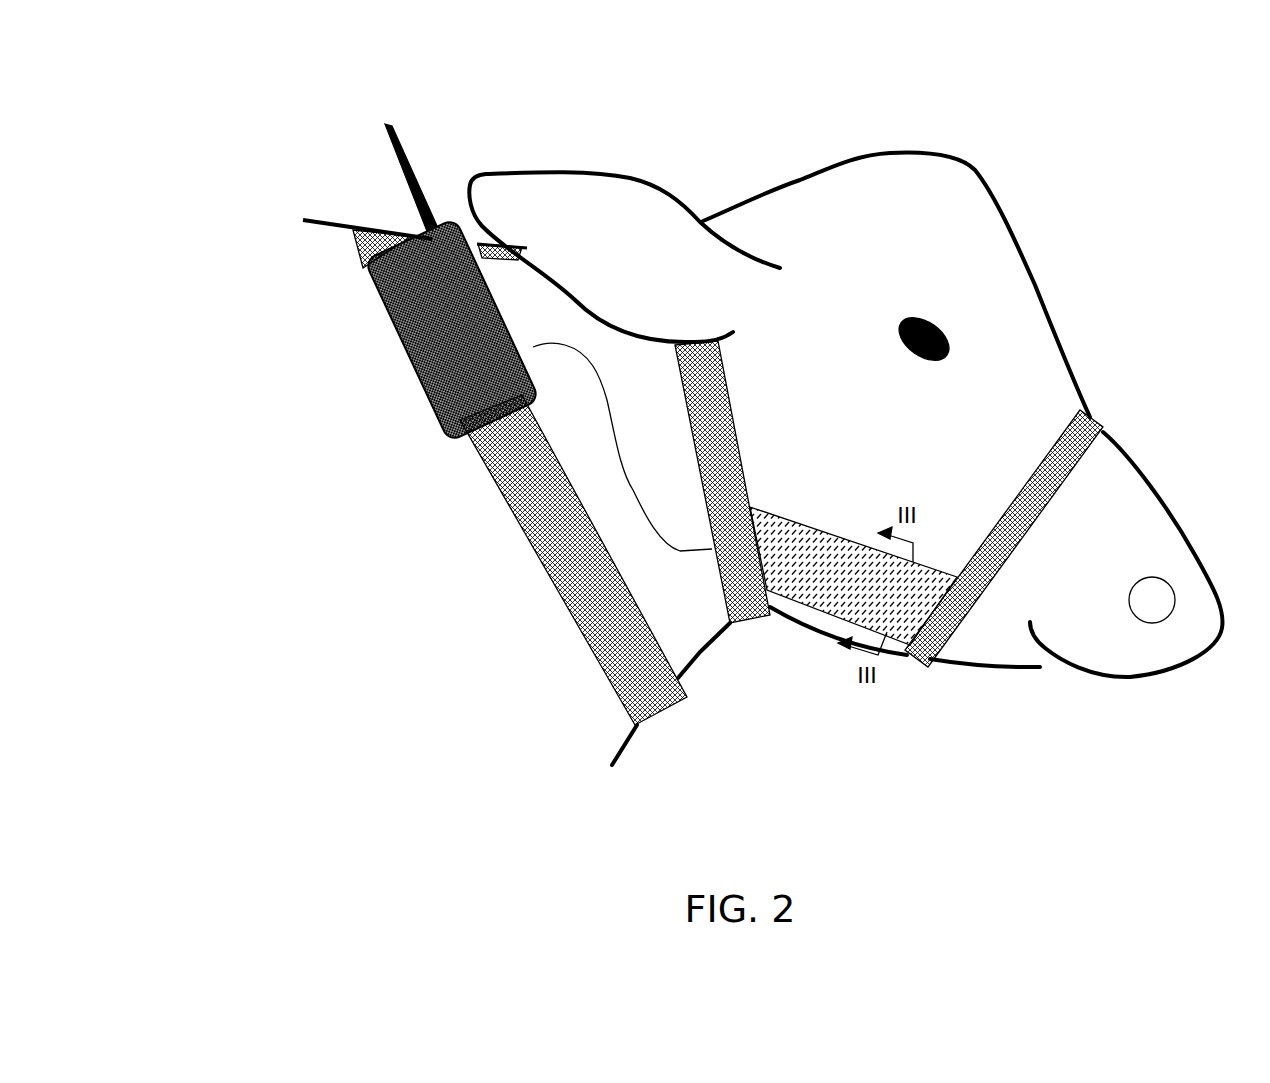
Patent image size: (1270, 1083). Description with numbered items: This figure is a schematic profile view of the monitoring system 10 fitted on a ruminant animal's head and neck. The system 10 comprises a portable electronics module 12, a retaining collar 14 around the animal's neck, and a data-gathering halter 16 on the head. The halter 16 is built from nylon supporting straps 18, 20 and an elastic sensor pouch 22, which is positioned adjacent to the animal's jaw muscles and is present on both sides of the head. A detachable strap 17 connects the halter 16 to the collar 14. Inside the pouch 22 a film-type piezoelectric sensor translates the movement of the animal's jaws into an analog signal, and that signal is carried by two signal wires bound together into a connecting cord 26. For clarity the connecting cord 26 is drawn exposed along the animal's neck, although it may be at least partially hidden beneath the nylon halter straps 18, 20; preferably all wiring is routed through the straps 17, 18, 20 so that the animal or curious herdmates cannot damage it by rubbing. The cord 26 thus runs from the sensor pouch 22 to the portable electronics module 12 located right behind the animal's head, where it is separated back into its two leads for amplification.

The monitoring system 10 is at (238, 523).
The portable electronics module 12 is at (414, 376).
The retaining collar 14 is at (602, 670).
The data-gathering halter 16 is at (815, 716).
The detachable strap 17 is at (487, 243).
The nylon supporting strap 18 is at (746, 468).
The nylon supporting strap 20 is at (1098, 420).
The elastic sensor pouch 22 is at (833, 608).
The connecting cord 26 is at (633, 487).